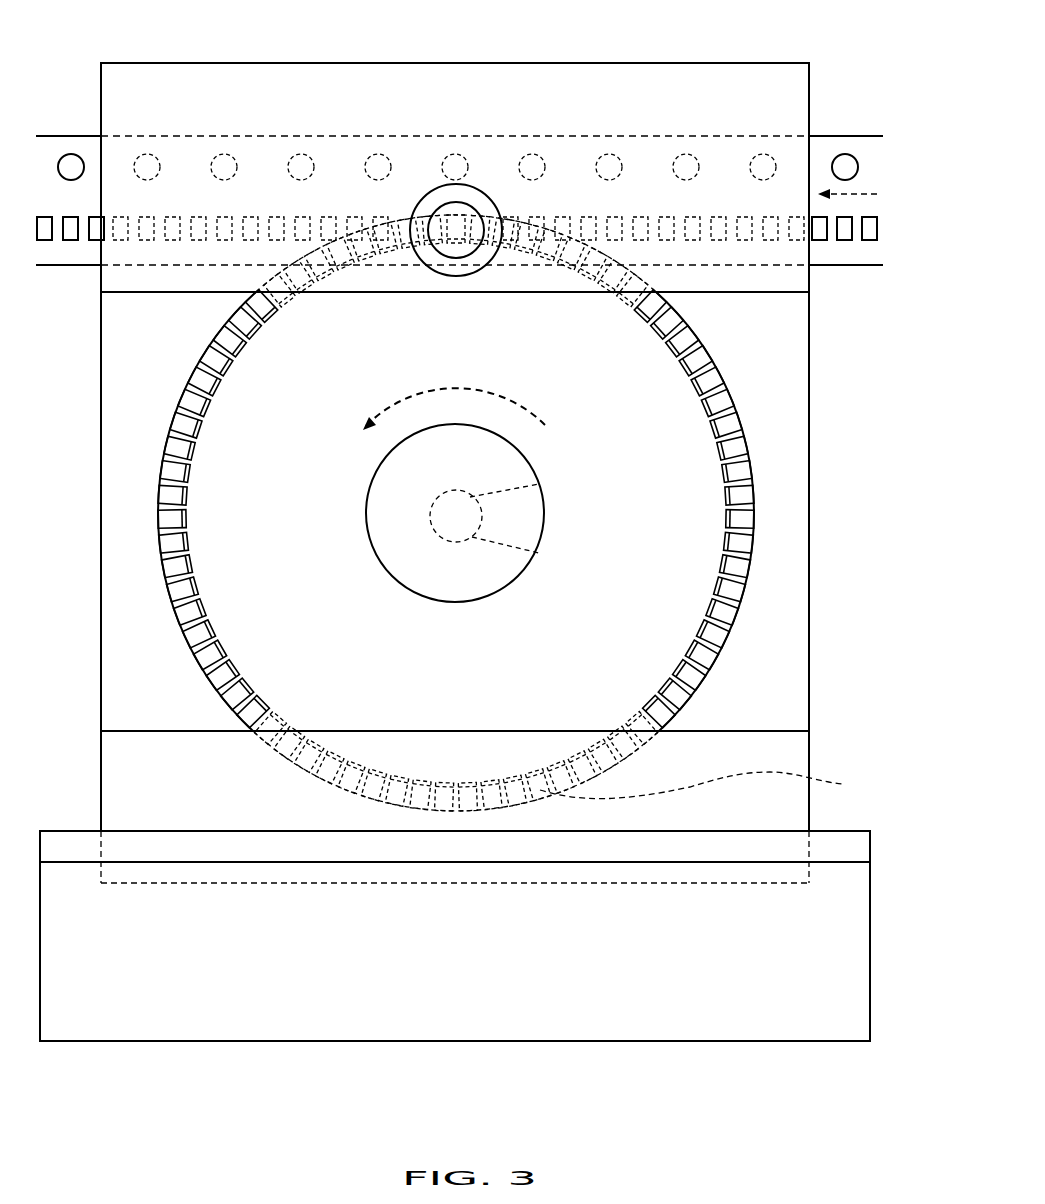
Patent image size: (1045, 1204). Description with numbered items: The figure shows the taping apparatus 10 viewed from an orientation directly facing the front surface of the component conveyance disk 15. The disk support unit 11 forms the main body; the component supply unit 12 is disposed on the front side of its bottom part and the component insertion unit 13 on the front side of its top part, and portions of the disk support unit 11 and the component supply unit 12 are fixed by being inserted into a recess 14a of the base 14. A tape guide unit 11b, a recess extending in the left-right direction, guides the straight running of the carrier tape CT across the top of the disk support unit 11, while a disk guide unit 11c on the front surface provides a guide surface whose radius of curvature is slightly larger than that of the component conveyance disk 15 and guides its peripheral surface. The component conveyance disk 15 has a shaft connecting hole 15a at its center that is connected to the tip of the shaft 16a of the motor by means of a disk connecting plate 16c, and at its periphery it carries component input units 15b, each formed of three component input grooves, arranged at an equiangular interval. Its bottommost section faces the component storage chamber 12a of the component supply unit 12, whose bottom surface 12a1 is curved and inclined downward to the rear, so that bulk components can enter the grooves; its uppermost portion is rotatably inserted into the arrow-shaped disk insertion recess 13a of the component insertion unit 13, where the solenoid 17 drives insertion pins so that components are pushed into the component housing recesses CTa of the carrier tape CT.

The taping apparatus 10 is at (99, 60).
The disk support unit 11 is at (810, 503).
The tape guide unit 11b is at (780, 132).
The disk guide unit 11c is at (793, 603).
The component supply unit 12 is at (800, 753).
The component storage chamber 12a is at (452, 750).
The bottom surface 12a1 is at (719, 785).
The component insertion unit 13 is at (800, 78).
The disk insertion recess 13a is at (512, 272).
The base 14 is at (858, 928).
The recess 14a is at (812, 845).
The component conveyance disk 15 is at (300, 527).
The shaft connecting hole 15a is at (545, 552).
The component input unit 15b is at (212, 618).
The shaft 16a is at (546, 480).
The disk connecting plate 16c is at (535, 518).
The solenoid 17 is at (456, 248).
The carrier tape CT is at (862, 265).
The component housing recesses CTa is at (845, 242).